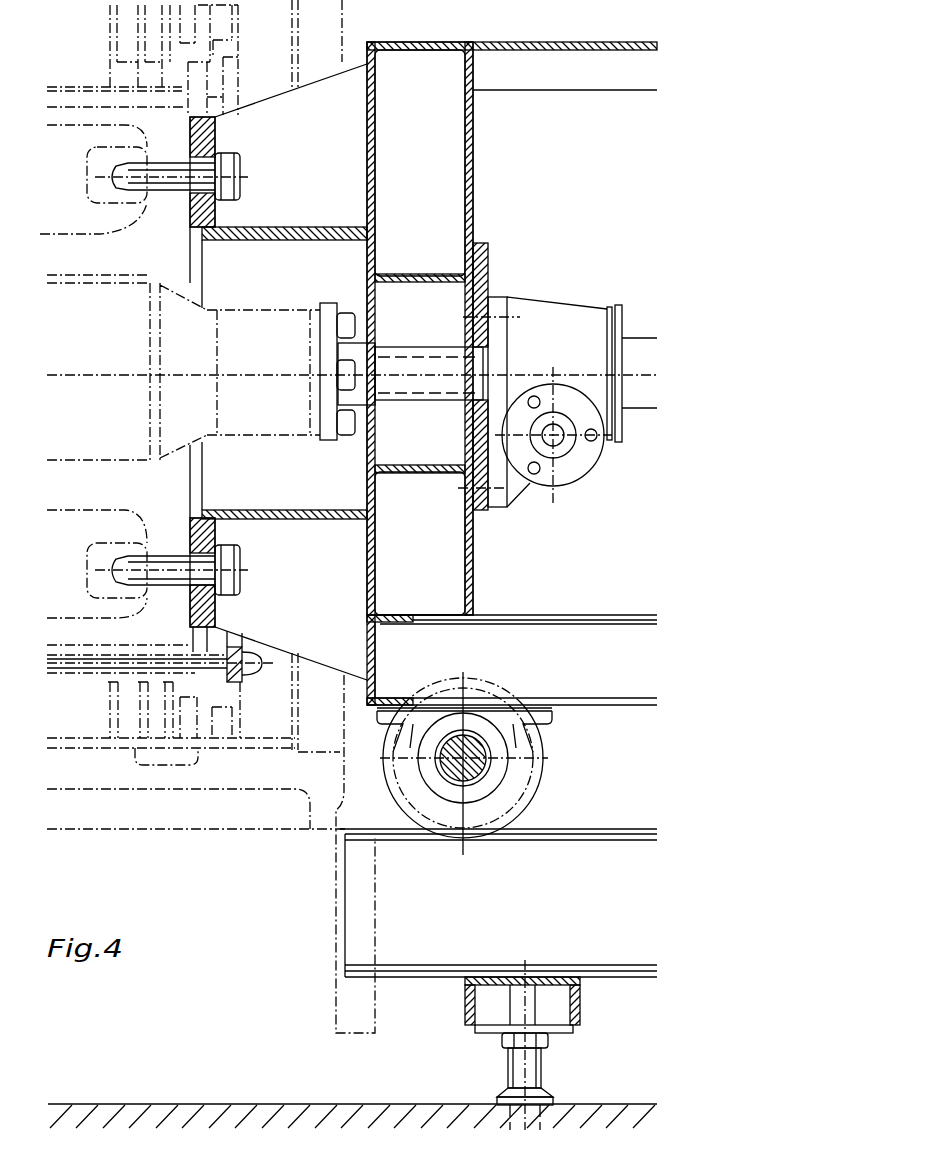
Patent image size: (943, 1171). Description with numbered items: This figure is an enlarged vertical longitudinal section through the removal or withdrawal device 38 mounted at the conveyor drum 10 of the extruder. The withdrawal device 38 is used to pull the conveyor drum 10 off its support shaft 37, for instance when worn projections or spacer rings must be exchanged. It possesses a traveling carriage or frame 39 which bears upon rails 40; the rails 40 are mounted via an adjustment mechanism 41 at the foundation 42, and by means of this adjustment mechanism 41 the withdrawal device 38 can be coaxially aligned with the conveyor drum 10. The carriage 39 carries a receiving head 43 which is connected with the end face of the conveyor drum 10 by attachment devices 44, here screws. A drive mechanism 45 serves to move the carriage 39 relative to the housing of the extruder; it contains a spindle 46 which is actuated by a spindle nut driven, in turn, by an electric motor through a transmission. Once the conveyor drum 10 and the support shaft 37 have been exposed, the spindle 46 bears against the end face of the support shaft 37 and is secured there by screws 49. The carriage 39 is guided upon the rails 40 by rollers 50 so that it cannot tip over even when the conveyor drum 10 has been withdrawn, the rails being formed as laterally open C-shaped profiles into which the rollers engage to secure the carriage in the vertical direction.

The conveyor drum 10 is at (180, 507).
The support shaft 37 is at (118, 446).
The withdrawal device 38 is at (583, 172).
The carriage 39 is at (570, 633).
The rails 40 is at (597, 850).
The adjustment mechanism 41 is at (528, 1068).
The foundation 42 is at (237, 1110).
The receiving head 43 is at (312, 102).
The attachment devices 44 is at (232, 564).
The drive mechanism 45 is at (592, 478).
The spindle 46 is at (427, 385).
The screws 49 is at (342, 318).
The rollers 50 is at (520, 788).